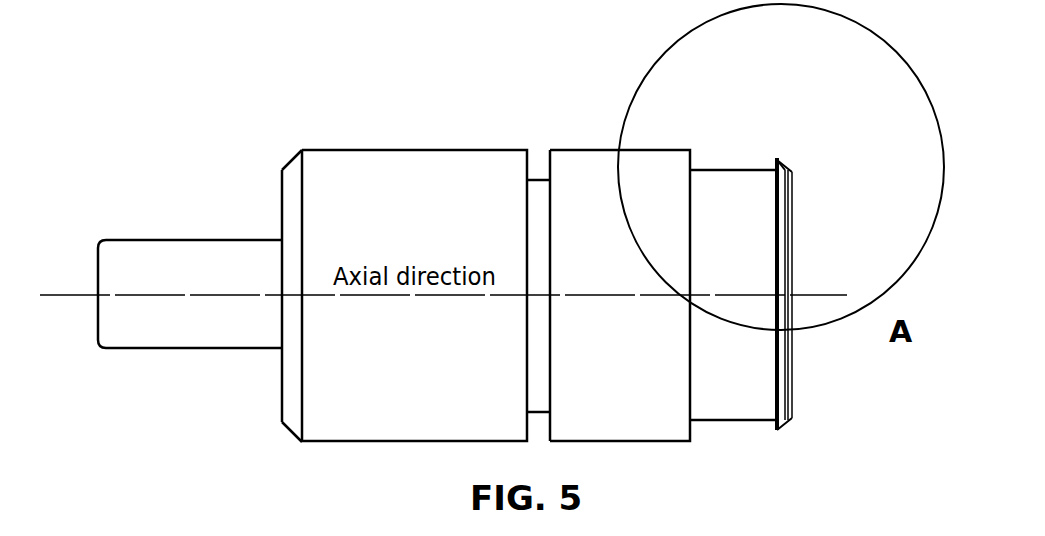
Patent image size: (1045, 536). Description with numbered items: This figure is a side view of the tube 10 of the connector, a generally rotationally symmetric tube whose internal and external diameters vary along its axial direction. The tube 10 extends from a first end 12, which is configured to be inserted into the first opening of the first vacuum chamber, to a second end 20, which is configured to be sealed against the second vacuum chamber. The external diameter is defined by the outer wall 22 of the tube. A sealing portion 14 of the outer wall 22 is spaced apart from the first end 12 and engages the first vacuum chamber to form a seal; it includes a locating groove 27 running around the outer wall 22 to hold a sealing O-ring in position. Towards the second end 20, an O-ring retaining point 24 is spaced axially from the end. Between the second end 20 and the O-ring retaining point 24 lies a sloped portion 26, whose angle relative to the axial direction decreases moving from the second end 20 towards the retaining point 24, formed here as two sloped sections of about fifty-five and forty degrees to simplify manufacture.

The tube 10 is at (562, 150).
The first end 12 is at (95, 329).
The sealing portion 14 is at (280, 394).
The second end 20 is at (803, 352).
The outer wall 22 is at (390, 148).
The O-ring retaining point 24 is at (778, 161).
The sloped portion 26 is at (778, 162).
The locating groove 27 is at (540, 177).